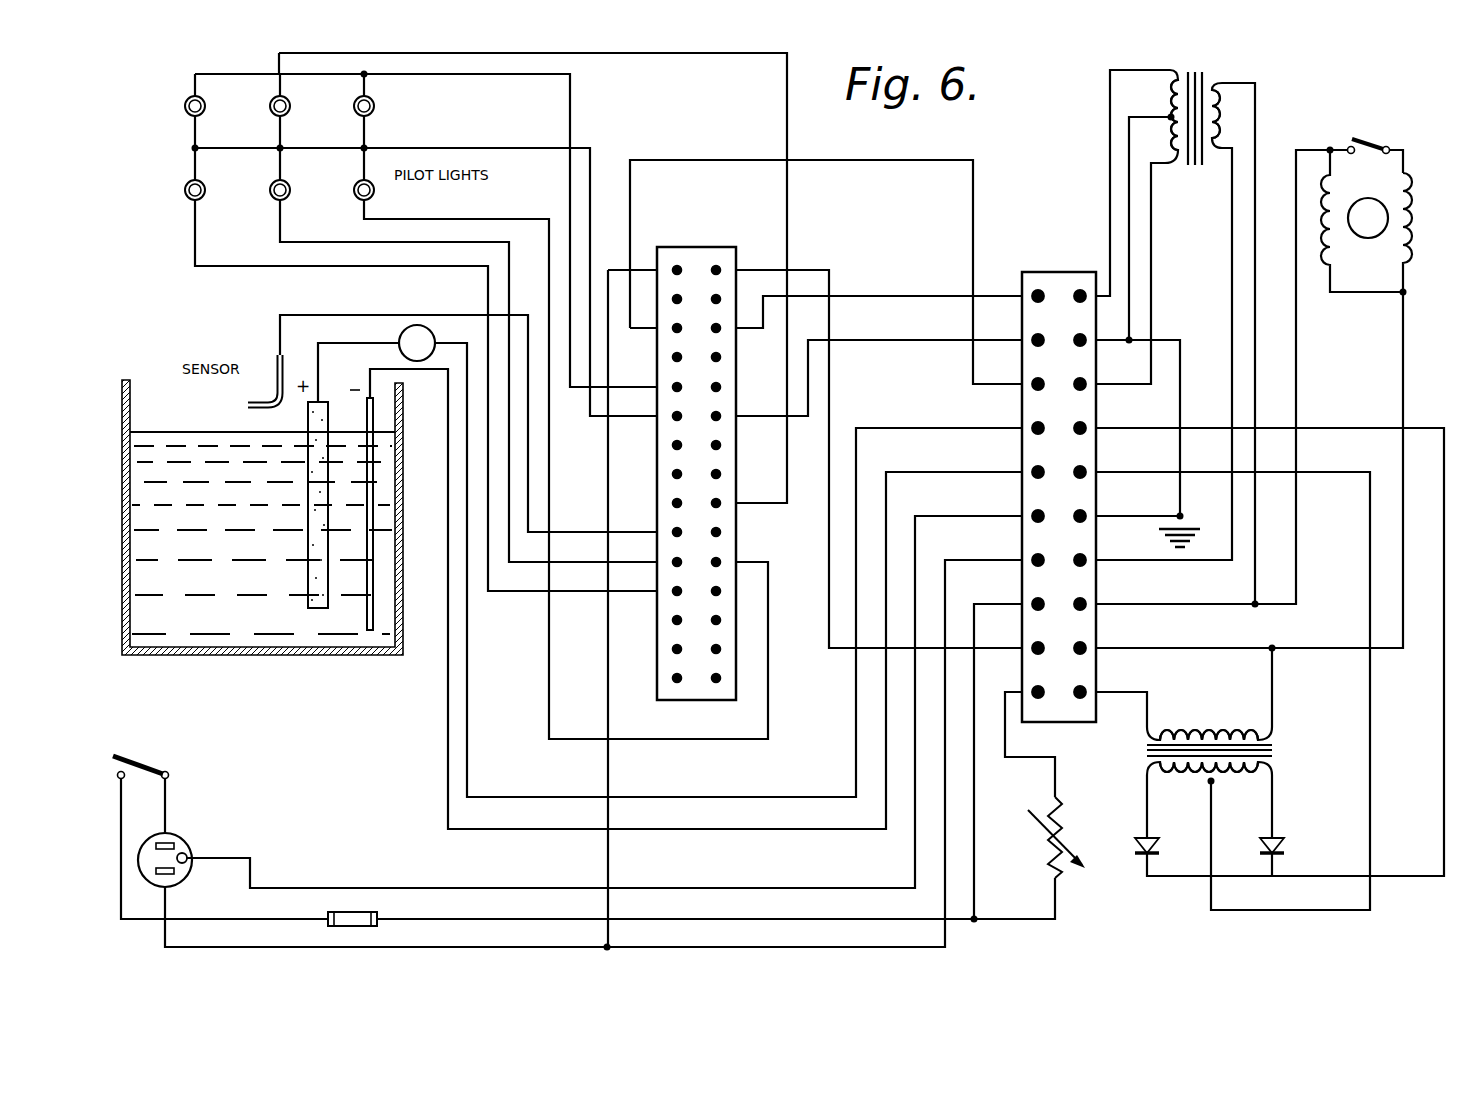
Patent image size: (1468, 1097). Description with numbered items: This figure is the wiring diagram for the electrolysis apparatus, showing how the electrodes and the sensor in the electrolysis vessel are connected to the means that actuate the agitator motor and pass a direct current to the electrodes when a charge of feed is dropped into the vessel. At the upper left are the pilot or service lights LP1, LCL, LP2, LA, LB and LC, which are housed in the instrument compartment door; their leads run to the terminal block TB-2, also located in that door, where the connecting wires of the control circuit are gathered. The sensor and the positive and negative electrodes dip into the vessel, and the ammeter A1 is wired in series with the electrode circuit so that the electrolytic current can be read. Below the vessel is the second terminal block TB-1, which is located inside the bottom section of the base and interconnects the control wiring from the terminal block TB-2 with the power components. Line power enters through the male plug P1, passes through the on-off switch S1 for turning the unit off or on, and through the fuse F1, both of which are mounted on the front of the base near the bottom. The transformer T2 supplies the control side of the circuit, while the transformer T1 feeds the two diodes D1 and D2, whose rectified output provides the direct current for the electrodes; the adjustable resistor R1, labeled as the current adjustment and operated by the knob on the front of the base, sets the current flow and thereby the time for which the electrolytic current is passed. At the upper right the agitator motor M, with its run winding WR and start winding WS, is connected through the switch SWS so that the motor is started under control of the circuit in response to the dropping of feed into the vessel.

The pilot light LP1 is at (205, 115).
The pilot light LCL is at (294, 114).
The pilot light LP2 is at (377, 115).
The pilot light LA is at (203, 198).
The pilot light LB is at (289, 198).
The pilot light LC is at (372, 198).
The ammeter A1 is at (425, 344).
The terminal block TB-2 is at (696, 461).
The terminal block TB-1 is at (1059, 483).
The transformer T2 is at (1205, 110).
The switch SWS is at (1359, 129).
The motor run winding WR is at (1353, 221).
The motor start winding WS is at (1420, 232).
The agitator motor M is at (1368, 218).
The transformer T1 is at (1224, 751).
The diode D1 is at (1156, 833).
The diode D2 is at (1281, 833).
The adjustable resistor R1 is at (1040, 875).
The on-off switch S1 is at (213, 762).
The male plug P1 is at (202, 855).
The fuse F1 is at (352, 907).